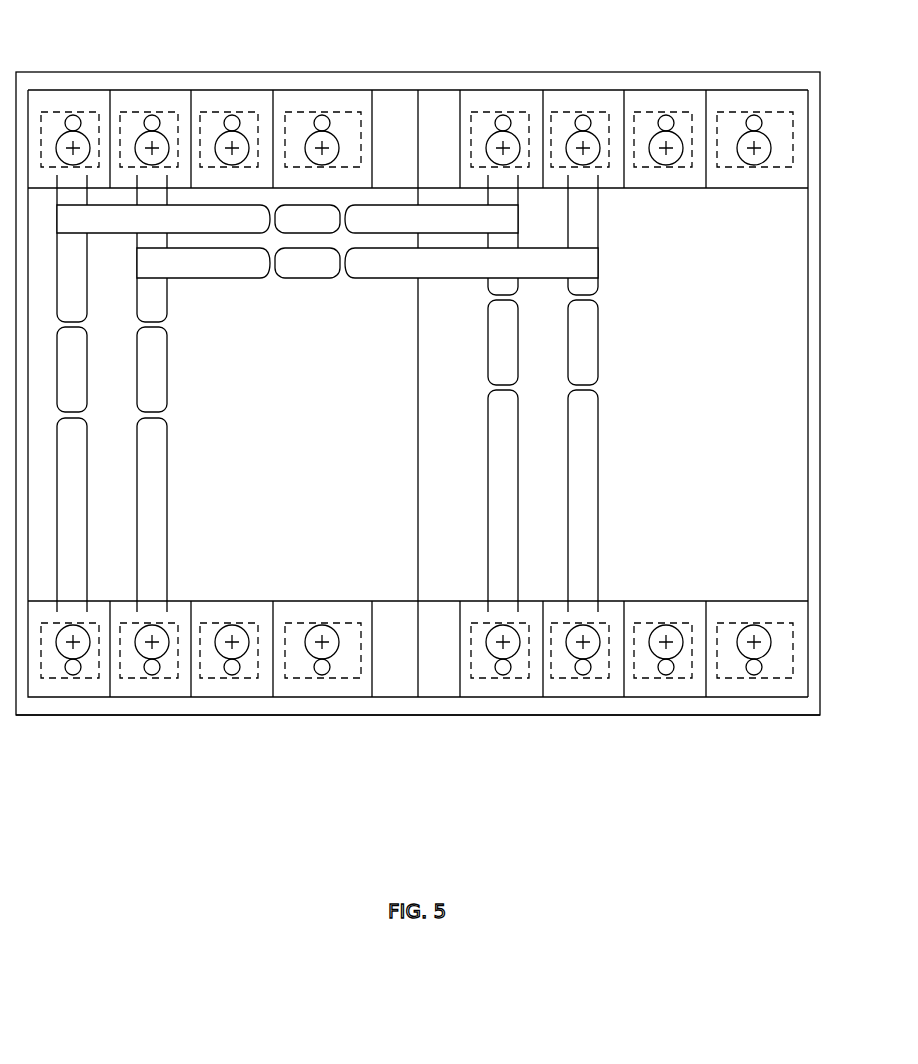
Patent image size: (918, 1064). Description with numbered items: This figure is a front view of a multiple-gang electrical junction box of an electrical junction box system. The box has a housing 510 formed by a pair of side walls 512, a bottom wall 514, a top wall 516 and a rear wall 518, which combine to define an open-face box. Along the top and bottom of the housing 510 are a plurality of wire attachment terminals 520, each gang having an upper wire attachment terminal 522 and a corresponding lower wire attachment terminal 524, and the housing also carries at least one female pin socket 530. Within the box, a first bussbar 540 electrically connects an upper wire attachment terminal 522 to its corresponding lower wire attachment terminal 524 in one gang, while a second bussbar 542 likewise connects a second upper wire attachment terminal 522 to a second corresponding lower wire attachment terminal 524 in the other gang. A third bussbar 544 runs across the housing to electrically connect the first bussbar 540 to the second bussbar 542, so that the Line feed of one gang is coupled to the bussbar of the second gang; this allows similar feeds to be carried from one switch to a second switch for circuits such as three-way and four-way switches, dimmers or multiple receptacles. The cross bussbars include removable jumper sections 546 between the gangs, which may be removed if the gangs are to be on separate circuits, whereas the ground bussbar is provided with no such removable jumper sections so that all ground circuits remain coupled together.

The housing 510 is at (131, 77).
The side walls 512 is at (808, 268).
The bottom wall 514 is at (290, 715).
The top wall 516 is at (372, 68).
The rear wall 518 is at (255, 493).
The wire attachment terminals 520 is at (730, 623).
The upper wire attachment terminal 522 is at (53, 125).
The lower wire attachment terminal 524 is at (53, 665).
The female pin socket 530 is at (150, 673).
The first bussbar 540 is at (70, 296).
The second bussbar 542 is at (497, 513).
The third bussbar 544 is at (388, 220).
The removable jumper sections 546 is at (317, 268).